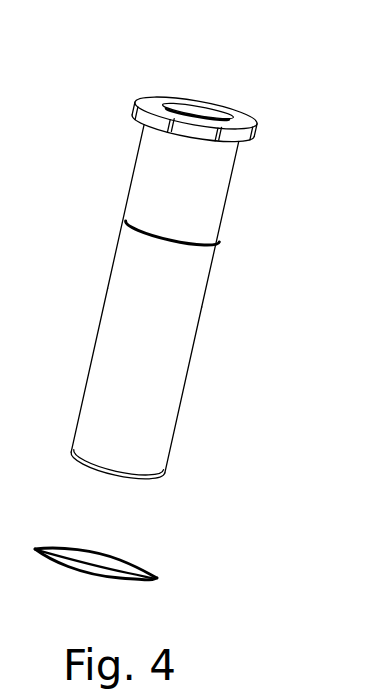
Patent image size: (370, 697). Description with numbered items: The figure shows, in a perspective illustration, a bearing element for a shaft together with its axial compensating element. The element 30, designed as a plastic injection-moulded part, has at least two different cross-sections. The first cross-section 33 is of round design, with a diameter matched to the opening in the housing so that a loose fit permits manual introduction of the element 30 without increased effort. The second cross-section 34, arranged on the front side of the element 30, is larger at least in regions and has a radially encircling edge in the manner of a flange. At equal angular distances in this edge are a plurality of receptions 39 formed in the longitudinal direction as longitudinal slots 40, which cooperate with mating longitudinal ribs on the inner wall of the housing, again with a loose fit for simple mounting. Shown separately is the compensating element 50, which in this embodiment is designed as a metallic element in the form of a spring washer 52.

The element 30 is at (177, 322).
The first cross-section 33 is at (142, 393).
The second cross-section 34 is at (136, 104).
The receptions 39 is at (182, 104).
The longitudinal slots 40 is at (240, 113).
The compensating element 50 is at (133, 565).
The spring washer 52 is at (97, 564).